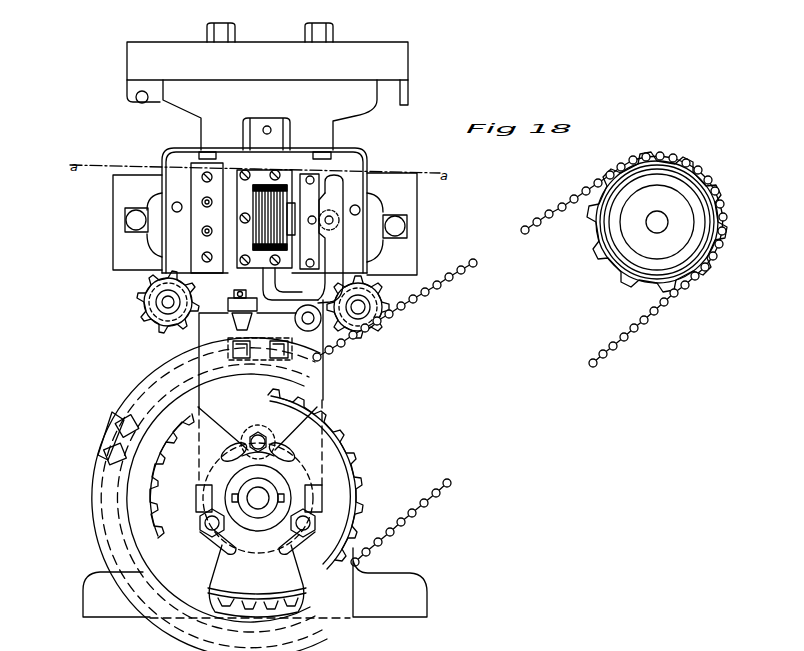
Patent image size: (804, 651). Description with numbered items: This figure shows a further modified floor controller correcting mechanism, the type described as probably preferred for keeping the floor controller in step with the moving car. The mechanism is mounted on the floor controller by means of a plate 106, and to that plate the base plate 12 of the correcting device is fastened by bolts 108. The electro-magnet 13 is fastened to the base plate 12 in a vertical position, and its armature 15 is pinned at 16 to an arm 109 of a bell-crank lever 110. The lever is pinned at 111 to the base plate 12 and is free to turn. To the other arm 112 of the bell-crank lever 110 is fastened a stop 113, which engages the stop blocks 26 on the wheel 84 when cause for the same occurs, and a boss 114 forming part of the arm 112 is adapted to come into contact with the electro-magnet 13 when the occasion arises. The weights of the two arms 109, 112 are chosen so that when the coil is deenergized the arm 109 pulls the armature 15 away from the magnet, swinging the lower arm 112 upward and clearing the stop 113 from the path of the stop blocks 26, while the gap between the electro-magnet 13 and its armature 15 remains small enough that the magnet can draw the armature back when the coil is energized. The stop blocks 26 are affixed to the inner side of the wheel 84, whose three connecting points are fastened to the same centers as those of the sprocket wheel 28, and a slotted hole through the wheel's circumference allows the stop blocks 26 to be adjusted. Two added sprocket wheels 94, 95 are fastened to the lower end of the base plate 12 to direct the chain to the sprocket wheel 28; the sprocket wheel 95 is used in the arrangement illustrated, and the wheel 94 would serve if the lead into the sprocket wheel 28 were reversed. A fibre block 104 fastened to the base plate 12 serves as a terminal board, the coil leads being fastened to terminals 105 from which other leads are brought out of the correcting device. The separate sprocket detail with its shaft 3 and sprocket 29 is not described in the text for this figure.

The shaft 3 is at (668, 225).
The base plate 12 is at (313, 187).
The electro-magnet 13 is at (263, 173).
The armature 15 is at (345, 173).
The pin 16 is at (335, 218).
The stop blocks 26 is at (112, 412).
The sprocket wheel 28 is at (357, 442).
The sprocket 29 is at (608, 265).
The wheel 84 is at (108, 512).
The sprocket wheel 94 is at (136, 306).
The sprocket wheel 95 is at (381, 305).
The fibre block 104 is at (195, 177).
The terminals 105 is at (203, 206).
The plate 106 is at (403, 260).
The bolts 108 is at (400, 223).
The arm 109 is at (333, 247).
The bell-crank lever 110 is at (290, 284).
The pin 111 is at (316, 323).
The arm 112 is at (229, 314).
The stop 113 is at (249, 324).
The boss 114 is at (262, 280).